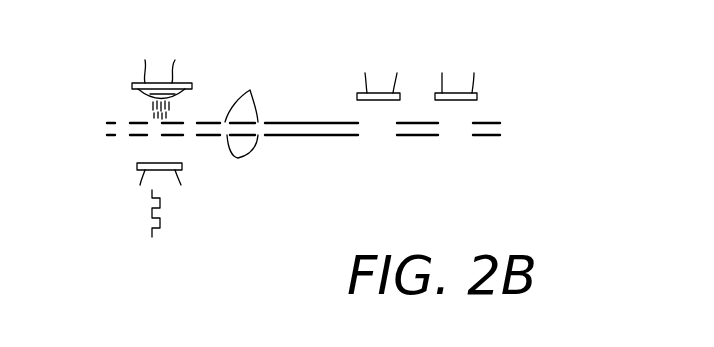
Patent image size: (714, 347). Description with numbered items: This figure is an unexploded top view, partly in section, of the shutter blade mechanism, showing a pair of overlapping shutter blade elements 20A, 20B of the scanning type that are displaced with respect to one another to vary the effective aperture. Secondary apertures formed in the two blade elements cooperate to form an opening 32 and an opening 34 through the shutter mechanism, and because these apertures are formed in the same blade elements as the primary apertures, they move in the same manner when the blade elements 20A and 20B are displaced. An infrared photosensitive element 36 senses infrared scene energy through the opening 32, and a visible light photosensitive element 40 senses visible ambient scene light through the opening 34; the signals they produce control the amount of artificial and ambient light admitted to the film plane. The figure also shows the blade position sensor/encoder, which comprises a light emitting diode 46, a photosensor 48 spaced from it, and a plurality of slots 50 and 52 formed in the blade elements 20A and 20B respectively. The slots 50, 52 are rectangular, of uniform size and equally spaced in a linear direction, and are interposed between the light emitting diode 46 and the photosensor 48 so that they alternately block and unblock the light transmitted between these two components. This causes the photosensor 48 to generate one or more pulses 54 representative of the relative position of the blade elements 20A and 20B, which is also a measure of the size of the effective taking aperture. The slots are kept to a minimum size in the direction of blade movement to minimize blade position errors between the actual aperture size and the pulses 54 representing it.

The shutter blade element 20A is at (498, 137).
The shutter blade element 20B is at (488, 123).
The opening 32 is at (382, 137).
The opening 34 is at (455, 137).
The infrared photosensitive element 36 is at (357, 97).
The visible light photosensitive element 40 is at (477, 97).
The light emitting diode 46 is at (192, 86).
The photosensor 48 is at (137, 166).
The slots 50 is at (238, 158).
The slots 52 is at (250, 90).
The pulses 54 is at (187, 221).